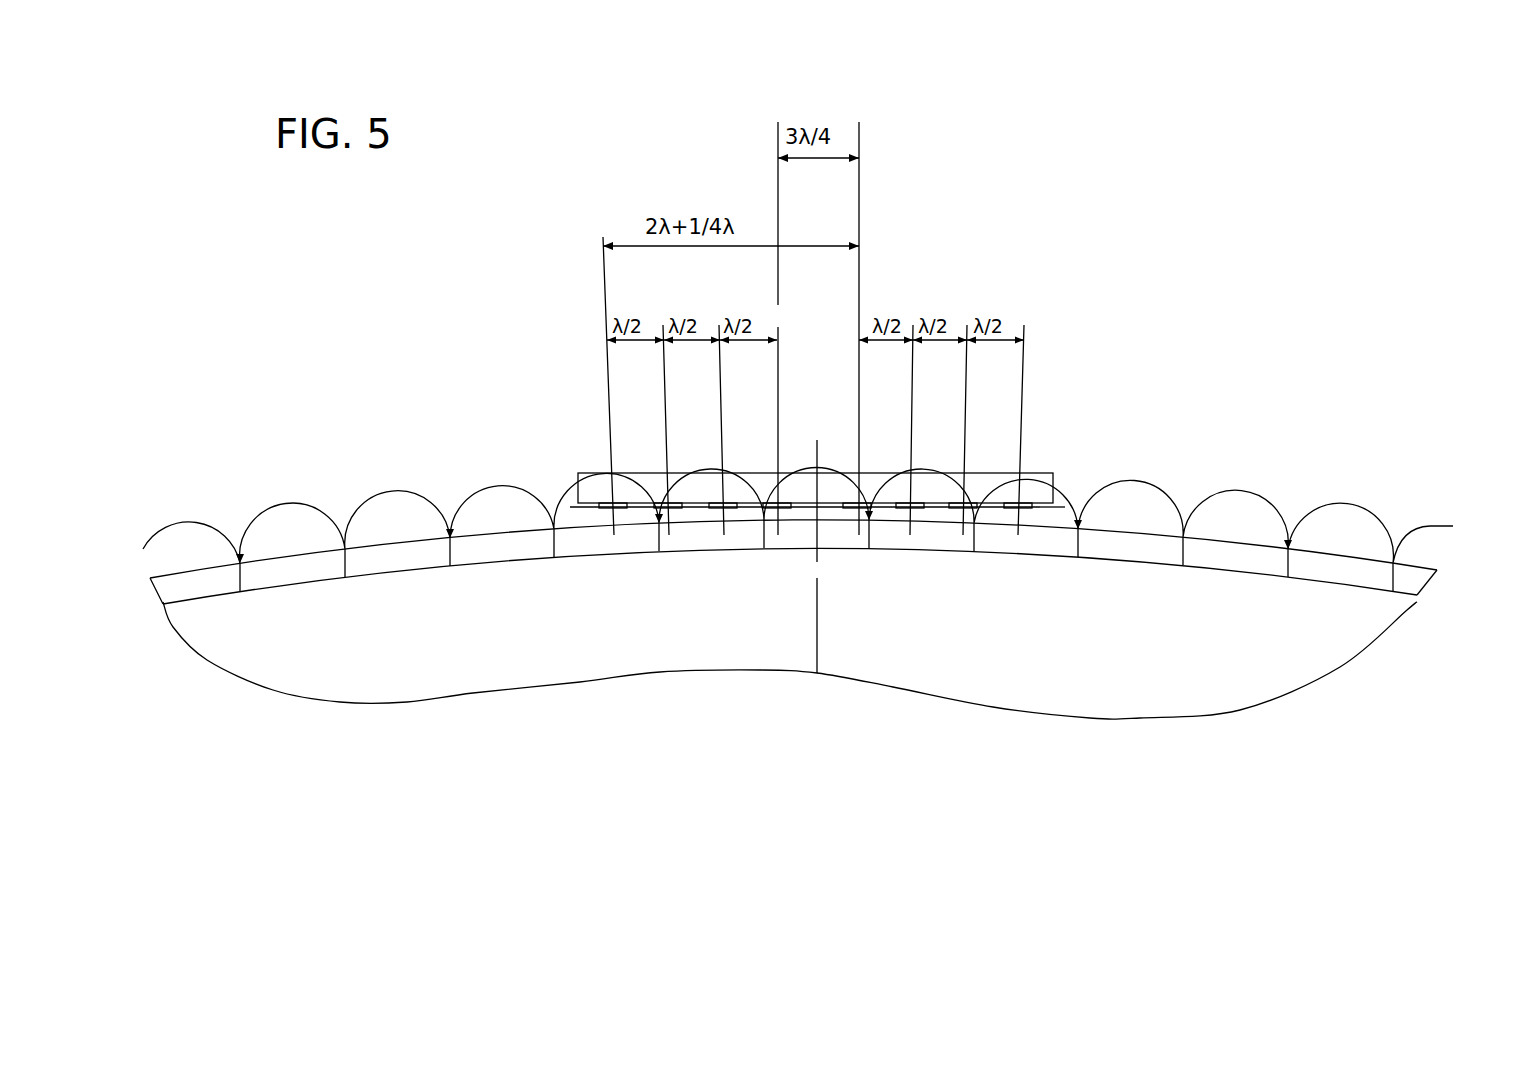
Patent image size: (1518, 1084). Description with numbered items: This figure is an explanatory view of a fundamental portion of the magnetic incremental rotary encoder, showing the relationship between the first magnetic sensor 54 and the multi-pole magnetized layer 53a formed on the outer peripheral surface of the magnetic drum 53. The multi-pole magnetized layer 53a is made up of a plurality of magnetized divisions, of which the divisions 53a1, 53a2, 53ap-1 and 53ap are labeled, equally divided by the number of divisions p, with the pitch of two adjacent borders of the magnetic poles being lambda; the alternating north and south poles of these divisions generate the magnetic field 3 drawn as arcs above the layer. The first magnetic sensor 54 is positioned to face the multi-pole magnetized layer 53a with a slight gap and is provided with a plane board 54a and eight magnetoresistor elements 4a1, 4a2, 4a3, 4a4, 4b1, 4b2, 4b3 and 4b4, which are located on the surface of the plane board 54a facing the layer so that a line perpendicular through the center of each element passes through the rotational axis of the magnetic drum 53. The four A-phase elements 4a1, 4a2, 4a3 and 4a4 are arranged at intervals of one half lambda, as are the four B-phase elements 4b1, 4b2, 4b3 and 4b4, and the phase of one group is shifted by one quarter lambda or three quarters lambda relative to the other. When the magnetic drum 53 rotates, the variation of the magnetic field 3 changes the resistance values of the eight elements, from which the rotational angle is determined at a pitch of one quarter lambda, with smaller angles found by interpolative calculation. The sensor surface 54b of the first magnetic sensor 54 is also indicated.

The magnetic drum 53 is at (505, 657).
The multi-pole magnetized layer 53a is at (389, 542).
The magnetized division 53ap-1 is at (1147, 533).
The magnetized division 53ap is at (1257, 545).
The magnetized division 53a1 is at (1340, 553).
The magnetized division 53a2 is at (1427, 527).
The magnetic field 3 is at (465, 495).
The first magnetic sensor 54 is at (1046, 482).
The plane board 54a is at (1062, 505).
The sensor surface 54b is at (1048, 512).
The magnetoresistor element 4a1 is at (610, 512).
The magnetoresistor element 4a2 is at (667, 512).
The magnetoresistor element 4a3 is at (720, 512).
The magnetoresistor element 4a4 is at (777, 512).
The magnetoresistor element 4b1 is at (857, 512).
The magnetoresistor element 4b2 is at (905, 511).
The magnetoresistor element 4b3 is at (958, 511).
The magnetoresistor element 4b4 is at (1013, 511).